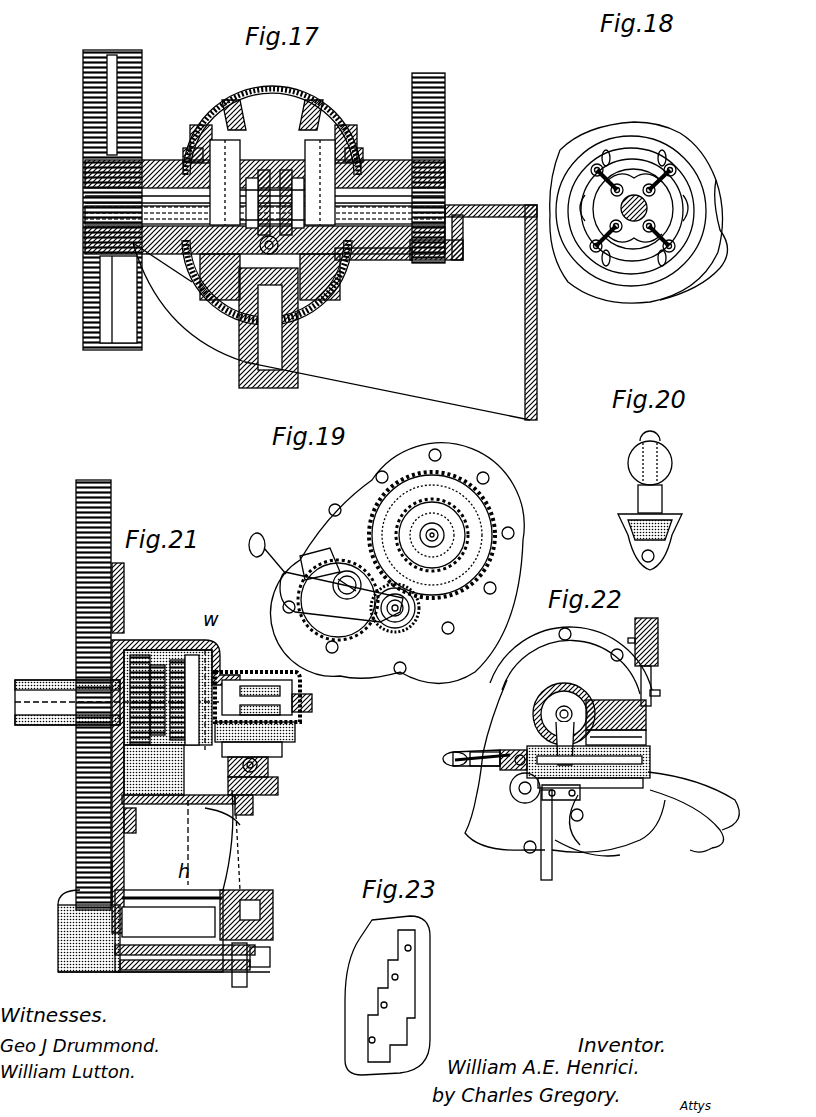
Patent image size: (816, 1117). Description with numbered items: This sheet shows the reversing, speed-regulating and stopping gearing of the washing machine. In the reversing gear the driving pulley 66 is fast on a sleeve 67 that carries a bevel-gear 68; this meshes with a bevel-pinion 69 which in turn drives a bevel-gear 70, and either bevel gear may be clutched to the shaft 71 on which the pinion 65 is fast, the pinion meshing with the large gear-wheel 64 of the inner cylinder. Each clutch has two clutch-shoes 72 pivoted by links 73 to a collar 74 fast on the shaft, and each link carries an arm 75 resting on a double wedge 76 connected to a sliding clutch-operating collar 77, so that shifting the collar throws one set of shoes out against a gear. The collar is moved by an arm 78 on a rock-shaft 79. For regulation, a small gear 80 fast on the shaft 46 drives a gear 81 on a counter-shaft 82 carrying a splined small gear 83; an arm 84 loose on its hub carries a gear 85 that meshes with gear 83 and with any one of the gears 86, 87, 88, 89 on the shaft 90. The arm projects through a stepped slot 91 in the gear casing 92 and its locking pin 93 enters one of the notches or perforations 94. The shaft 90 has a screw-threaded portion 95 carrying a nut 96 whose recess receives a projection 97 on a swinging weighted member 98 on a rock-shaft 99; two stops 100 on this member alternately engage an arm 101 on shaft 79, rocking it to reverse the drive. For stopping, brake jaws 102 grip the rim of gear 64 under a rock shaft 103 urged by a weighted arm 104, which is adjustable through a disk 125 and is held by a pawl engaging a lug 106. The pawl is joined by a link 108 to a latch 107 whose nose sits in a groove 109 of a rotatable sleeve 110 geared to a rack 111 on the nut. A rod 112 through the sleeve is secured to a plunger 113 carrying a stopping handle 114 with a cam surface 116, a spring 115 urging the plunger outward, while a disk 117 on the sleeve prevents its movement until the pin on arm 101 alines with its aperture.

In FIG. 21, the shaft 46 is at (25, 680).
In FIG. 17, the large gear-wheel 64 is at (447, 100).
In FIG. 21, the large gear-wheel 64 is at (112, 522).
In FIG. 17, the pinion 65 is at (445, 210).
In FIG. 17, the driving pulley 66 is at (83, 92).
In FIG. 17, the sleeve 67 is at (150, 160).
In FIG. 17, the bevel-gear 68 is at (237, 102).
In FIG. 17, the bevel-pinion 69 is at (264, 256).
In FIG. 17, the bevel-gear 70 is at (316, 128).
In FIG. 17, the shaft 71 is at (355, 195).
In FIG. 18, the shaft 71 is at (618, 205).
In FIG. 18, the clutch-shoes 72 is at (594, 163).
In FIG. 18, the links 73 is at (606, 178).
In FIG. 18, the collar 74 is at (705, 262).
In FIG. 18, the arm 75 is at (645, 184).
In FIG. 18, the double wedge 76 is at (668, 158).
In FIG. 17, the clutch-operating collar 77 is at (270, 170).
In FIG. 17, the arm 78 is at (352, 270).
In FIG. 17, the rock-shaft 79 is at (230, 287).
In FIG. 21, the small gear 80 is at (100, 735).
In FIG. 21, the gear 81 is at (112, 782).
In FIG. 19, the counter-shaft 82 is at (395, 632).
In FIG. 21, the counter-shaft 82 is at (236, 830).
In FIG. 19, the small gear 83 is at (380, 618).
In FIG. 21, the small gear 83 is at (124, 828).
In FIG. 19, the arm 84 is at (262, 536).
In FIG. 21, the arm 84 is at (112, 865).
In FIG. 19, the gear 85 is at (340, 565).
In FIG. 19, the gear 86 is at (440, 535).
In FIG. 21, the gear 86 is at (190, 650).
In FIG. 19, the gear 87 is at (440, 520).
In FIG. 21, the gear 87 is at (165, 640).
In FIG. 19, the gear 88 is at (430, 500).
In FIG. 21, the gear 88 is at (150, 637).
In FIG. 19, the gear 89 is at (398, 490).
In FIG. 21, the gear 89 is at (80, 572).
In FIG. 19, the shaft 90 is at (440, 535).
In FIG. 21, the shaft 90 is at (260, 795).
In FIG. 22, the shaft 90 is at (545, 690).
In FIG. 23, the stepped slot 91 is at (380, 1050).
In FIG. 21, the gear casing 92 is at (258, 664).
In FIG. 23, the gear casing 92 is at (395, 928).
In FIG. 19, the locking pin 93 is at (300, 562).
In FIG. 23, the notches or perforations 94 is at (370, 1040).
In FIG. 21, the screw-threaded portion 95 is at (280, 700).
In FIG. 21, the nut 96 is at (270, 745).
In FIG. 22, the nut 96 is at (555, 715).
In FIG. 22, the projection 97 is at (582, 690).
In FIG. 20, the swinging weighted member 98 is at (652, 510).
In FIG. 22, the swinging weighted member 98 is at (655, 700).
In FIG. 22, the rock-shaft 99 is at (645, 740).
In FIG. 20, the projections or stops 100 is at (660, 535).
In FIG. 22, the projections or stops 100 is at (645, 712).
In FIG. 22, the arm 101 is at (706, 845).
In FIG. 21, the brake-shoes or jaws 102 is at (58, 925).
In FIG. 21, the rock shaft 103 is at (185, 960).
In FIG. 21, the weighted arm 104 is at (255, 905).
In FIG. 21, the lug or projection 106 is at (240, 823).
In FIG. 22, the latch 107 is at (585, 838).
In FIG. 21, the link 108 is at (256, 836).
In FIG. 22, the link 108 is at (610, 852).
In FIG. 22, the groove 109 is at (665, 815).
In FIG. 22, the rotatable sleeve 110 is at (660, 800).
In FIG. 21, the rack 111 is at (262, 762).
In FIG. 22, the rack 111 is at (565, 730).
In FIG. 21, the pin or rod 112 is at (268, 770).
In FIG. 22, the pin or rod 112 is at (650, 760).
In FIG. 22, the plunger 113 is at (513, 762).
In FIG. 22, the stopping handle 114 is at (470, 756).
In FIG. 22, the spring 115 is at (530, 787).
In FIG. 22, the cam surface 116 is at (537, 777).
In FIG. 22, the disk or head 117 is at (645, 785).
In FIG. 21, the disk 125 is at (243, 988).